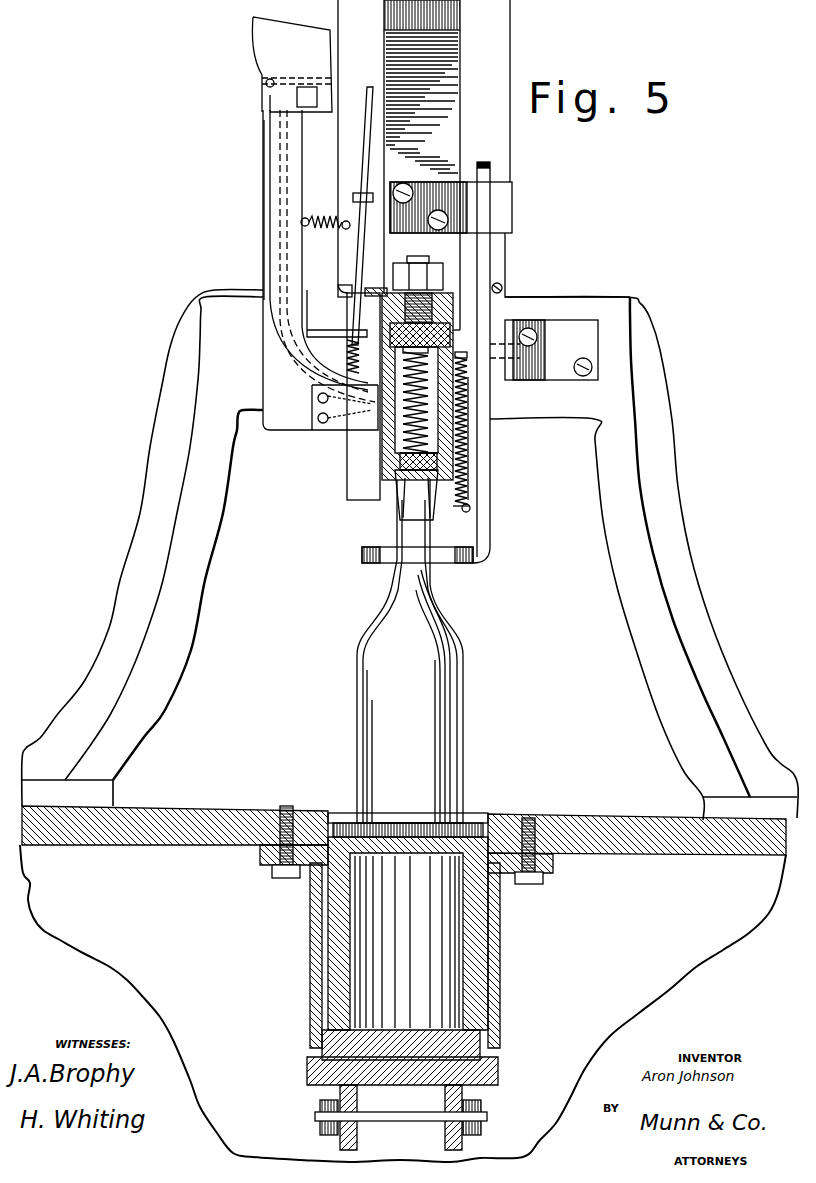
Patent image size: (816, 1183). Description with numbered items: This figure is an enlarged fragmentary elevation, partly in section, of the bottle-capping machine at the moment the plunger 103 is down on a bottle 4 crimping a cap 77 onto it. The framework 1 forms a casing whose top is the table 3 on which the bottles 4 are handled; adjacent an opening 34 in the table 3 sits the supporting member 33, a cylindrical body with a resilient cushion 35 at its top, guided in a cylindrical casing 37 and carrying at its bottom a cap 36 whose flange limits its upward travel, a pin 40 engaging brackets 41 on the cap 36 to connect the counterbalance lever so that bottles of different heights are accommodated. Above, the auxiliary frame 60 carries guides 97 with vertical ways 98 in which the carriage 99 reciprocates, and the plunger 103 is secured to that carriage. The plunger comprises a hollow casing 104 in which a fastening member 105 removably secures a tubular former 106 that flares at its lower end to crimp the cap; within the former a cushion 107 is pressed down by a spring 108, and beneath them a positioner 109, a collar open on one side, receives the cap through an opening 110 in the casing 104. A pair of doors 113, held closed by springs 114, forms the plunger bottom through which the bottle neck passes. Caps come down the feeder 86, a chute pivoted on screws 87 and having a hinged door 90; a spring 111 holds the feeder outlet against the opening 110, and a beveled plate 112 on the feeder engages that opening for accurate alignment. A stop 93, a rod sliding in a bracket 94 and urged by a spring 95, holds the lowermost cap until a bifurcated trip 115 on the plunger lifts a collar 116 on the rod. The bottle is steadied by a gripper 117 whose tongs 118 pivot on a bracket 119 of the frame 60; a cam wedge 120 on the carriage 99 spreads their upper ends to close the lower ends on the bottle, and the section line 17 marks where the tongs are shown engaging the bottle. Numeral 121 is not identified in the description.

The framework 1 is at (664, 988).
The table 3 is at (600, 823).
The bottle 4 is at (450, 700).
The section line 17— 17 is at (375, 535).
The supporting member 33 is at (478, 905).
The opening 34 is at (490, 820).
The resilient cushion 35 is at (465, 822).
The cap 36 is at (498, 1074).
The guiding cylindrical casing 37 is at (498, 998).
The pin 40 is at (487, 1116).
The brackets 41 is at (352, 1136).
The auxiliary frame 60 is at (665, 412).
The cap 77 is at (450, 464).
The feeder 86 is at (272, 230).
The screws 87 is at (296, 98).
The door 90 is at (264, 195).
The stop 93 is at (369, 87).
The bracket 94 is at (323, 333).
The spring 95 is at (348, 350).
The guides 97 is at (508, 58).
The guiding channels or ways 98 is at (461, 18).
The carriage 99 is at (452, 122).
The plunger 103 is at (460, 313).
The hollow casing 104 is at (460, 330).
The fastening member 105 is at (434, 275).
The hollow tubular former 106 is at (435, 392).
The cushion 107 is at (432, 412).
The spring 108 is at (463, 357).
The positioner 109 is at (468, 506).
The opening 110 is at (383, 488).
The spring 111 is at (318, 218).
The beveled plate 112 is at (345, 420).
The doors 113 is at (400, 505).
The springs 114 is at (468, 440).
The trip 115 is at (345, 292).
The collar 116 is at (358, 193).
The gripper 117 is at (482, 268).
The tongs 118 is at (372, 563).
The bracket 119 is at (530, 322).
The cam wedge 120 is at (512, 213).
The screw 121 is at (501, 288).